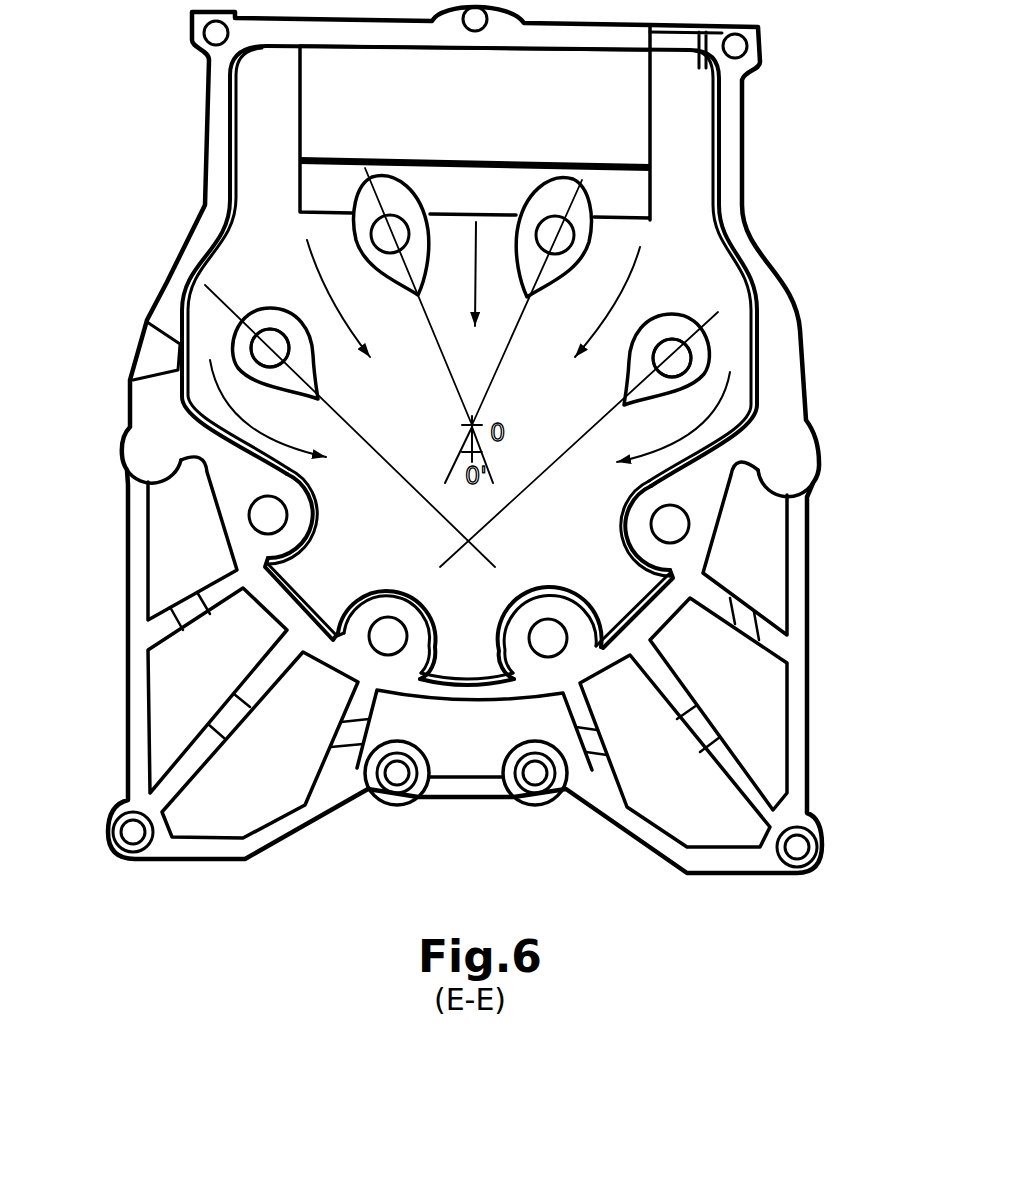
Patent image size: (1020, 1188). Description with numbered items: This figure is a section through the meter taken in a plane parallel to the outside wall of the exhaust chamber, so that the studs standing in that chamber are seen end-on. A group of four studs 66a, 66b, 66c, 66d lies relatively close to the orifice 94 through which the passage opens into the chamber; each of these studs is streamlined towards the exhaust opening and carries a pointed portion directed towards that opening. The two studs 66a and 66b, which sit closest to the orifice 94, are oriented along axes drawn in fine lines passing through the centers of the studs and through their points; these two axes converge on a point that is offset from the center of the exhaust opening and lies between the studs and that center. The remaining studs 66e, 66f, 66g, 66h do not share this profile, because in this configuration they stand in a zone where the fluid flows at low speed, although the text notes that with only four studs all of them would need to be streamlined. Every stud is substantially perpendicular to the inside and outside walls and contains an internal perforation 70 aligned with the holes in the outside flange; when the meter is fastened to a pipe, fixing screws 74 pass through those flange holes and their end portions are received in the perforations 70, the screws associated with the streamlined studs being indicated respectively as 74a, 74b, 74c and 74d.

The orifice 94 is at (642, 133).
The stud 66a is at (356, 232).
The stud 66b is at (592, 241).
The stud 66c is at (253, 325).
The stud 66d is at (690, 327).
The stud 66e is at (232, 497).
The recessed portion 66f is at (707, 506).
The recessed portion 66g is at (385, 660).
The stud 66h is at (560, 665).
The bolt hole 74a is at (371, 231).
The bolt hole 74b is at (574, 232).
The bolt hole 74c is at (253, 340).
The bolt hole 74d is at (686, 350).
The fixing screw 74 is at (268, 515).
The internal perforation 70 is at (253, 346).